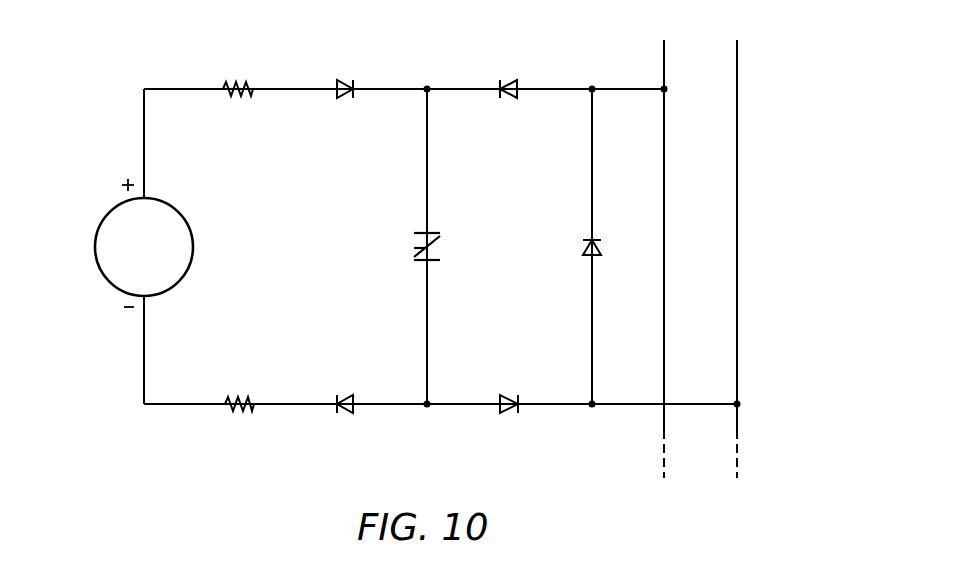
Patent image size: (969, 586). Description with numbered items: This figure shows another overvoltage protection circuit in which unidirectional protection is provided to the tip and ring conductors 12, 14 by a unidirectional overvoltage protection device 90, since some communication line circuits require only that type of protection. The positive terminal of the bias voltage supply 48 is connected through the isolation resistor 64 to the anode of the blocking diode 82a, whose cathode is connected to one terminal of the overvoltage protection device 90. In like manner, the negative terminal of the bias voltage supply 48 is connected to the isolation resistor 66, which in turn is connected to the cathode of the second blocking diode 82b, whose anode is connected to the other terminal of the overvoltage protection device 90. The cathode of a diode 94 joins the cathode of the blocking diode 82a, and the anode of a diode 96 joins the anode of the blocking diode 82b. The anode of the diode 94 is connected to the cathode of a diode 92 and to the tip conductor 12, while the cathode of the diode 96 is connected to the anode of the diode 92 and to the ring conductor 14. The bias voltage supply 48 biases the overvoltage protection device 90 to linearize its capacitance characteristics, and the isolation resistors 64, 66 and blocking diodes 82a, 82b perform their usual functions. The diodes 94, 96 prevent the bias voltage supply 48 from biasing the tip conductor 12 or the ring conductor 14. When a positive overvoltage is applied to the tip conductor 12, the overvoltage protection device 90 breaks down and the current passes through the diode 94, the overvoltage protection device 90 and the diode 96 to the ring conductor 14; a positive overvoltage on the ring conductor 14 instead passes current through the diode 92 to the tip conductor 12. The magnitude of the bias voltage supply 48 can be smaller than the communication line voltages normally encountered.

The tip conductor 12 is at (665, 200).
The ring conductor 14 is at (738, 270).
The bias voltage supply 48 is at (95, 246).
The isolation resistor 64 is at (232, 82).
The isolation resistor 66 is at (235, 412).
The blocking diode 82a is at (348, 80).
The second blocking diode 82b is at (345, 412).
The unidirectional overvoltage protection device 90 is at (441, 250).
The diode 92 is at (582, 246).
The diode 94 is at (506, 80).
The diode 96 is at (511, 413).